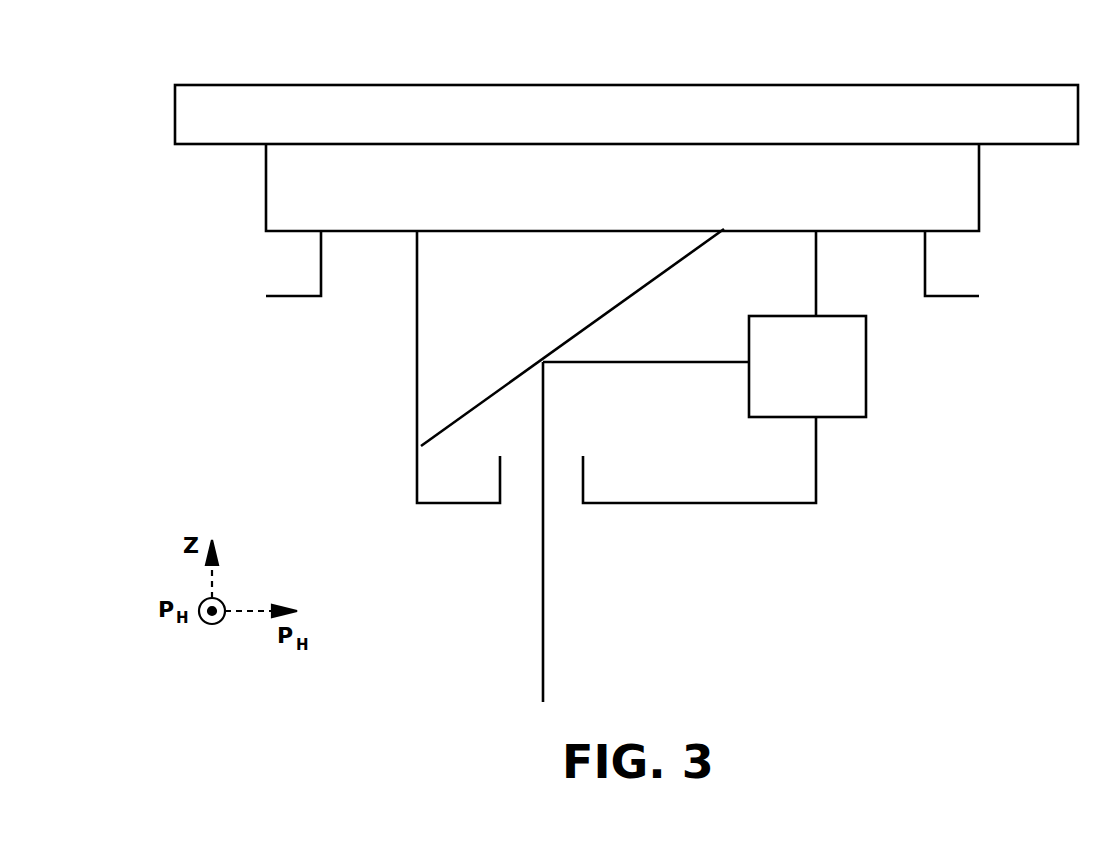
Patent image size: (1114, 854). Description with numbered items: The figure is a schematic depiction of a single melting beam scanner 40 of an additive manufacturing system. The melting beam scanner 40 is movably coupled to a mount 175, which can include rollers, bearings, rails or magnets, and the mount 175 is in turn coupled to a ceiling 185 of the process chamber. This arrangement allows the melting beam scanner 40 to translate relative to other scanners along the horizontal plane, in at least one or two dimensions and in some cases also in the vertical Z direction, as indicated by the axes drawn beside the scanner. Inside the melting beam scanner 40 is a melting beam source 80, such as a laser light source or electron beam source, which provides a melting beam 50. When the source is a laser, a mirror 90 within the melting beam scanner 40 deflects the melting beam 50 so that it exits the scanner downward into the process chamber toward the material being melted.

The ceiling 185 is at (817, 110).
The mount 175 is at (652, 202).
The mirror 90 is at (547, 343).
The melting beam source 80 is at (836, 385).
The melting beam 50 is at (648, 376).
The melting beam scanner 40 is at (853, 512).